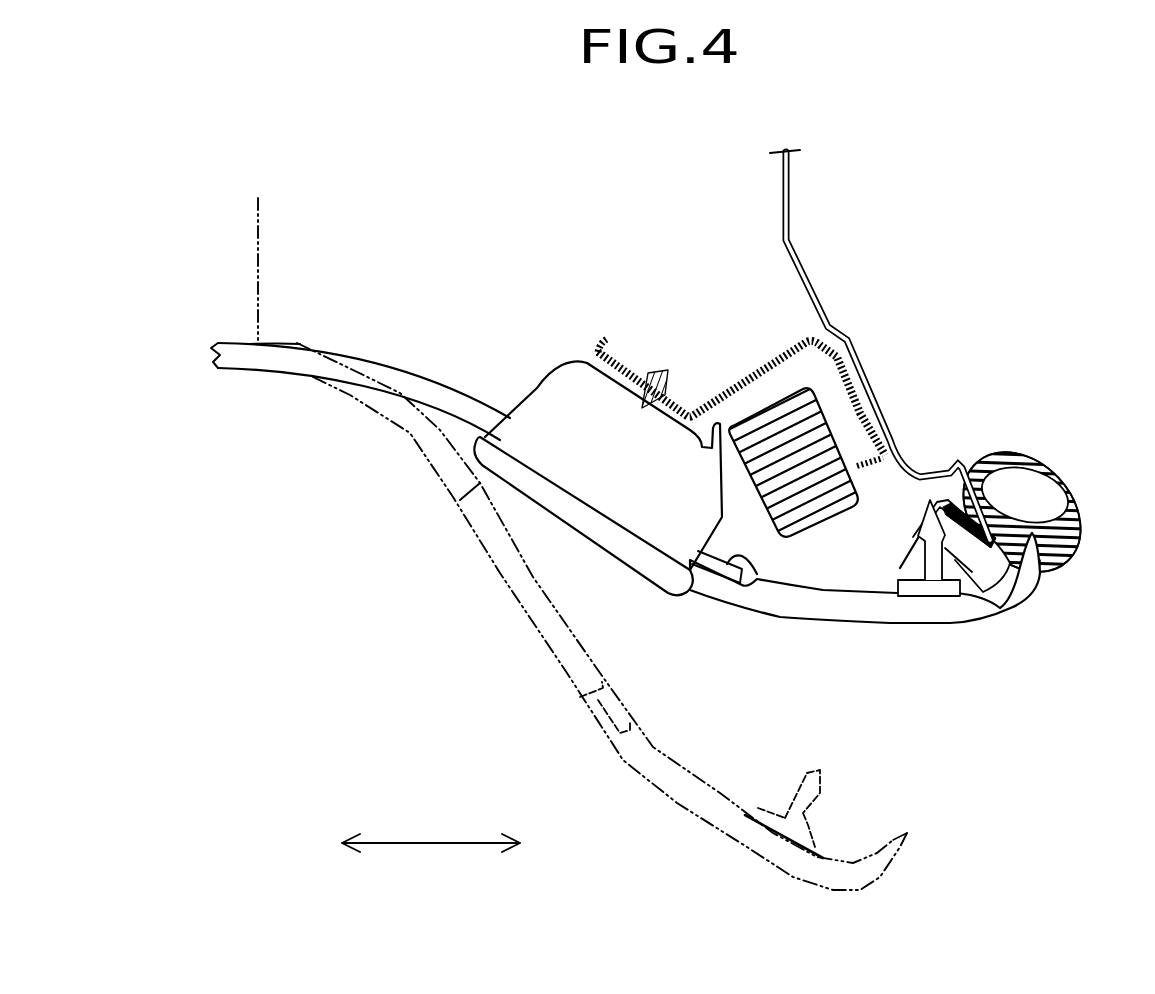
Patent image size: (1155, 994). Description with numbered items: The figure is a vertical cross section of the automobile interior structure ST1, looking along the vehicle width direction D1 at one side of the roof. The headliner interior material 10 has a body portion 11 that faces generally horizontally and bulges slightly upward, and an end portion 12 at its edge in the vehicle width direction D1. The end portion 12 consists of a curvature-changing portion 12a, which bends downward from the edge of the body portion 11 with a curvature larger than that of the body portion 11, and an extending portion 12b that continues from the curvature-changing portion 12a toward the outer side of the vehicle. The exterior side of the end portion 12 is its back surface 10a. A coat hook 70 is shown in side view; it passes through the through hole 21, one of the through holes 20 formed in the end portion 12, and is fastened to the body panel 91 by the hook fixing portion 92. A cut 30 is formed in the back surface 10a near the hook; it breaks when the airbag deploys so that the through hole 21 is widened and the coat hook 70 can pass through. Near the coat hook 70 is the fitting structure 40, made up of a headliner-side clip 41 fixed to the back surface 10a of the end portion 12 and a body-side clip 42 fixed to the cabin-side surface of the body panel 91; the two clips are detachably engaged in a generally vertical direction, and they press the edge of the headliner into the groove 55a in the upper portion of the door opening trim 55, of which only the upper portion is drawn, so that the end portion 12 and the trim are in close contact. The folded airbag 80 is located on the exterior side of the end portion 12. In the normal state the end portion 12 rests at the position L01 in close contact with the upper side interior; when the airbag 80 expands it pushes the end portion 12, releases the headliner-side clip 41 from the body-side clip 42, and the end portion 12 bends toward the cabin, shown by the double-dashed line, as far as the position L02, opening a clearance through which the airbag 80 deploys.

The headliner interior material 10 is at (309, 420).
The back surface 10a is at (367, 350).
The body portion 11 is at (243, 328).
The end portion 12 is at (695, 470).
The curvature-changing portion 12a is at (293, 340).
The extending portion 12b is at (867, 627).
The through hole 20 is at (596, 415).
The through hole 21 is at (508, 415).
The cut 30 is at (753, 570).
The fitting structure 40 is at (1080, 655).
The headliner-side clip 41 is at (930, 592).
The body-side clip 42 is at (980, 590).
The door opening trim 55 is at (1035, 452).
The groove 55a is at (1038, 580).
The coat hook 70 is at (560, 358).
The airbag 80 is at (825, 425).
The body panel 91 is at (813, 270).
The hook fixing portion 92 is at (757, 370).
The automobile interior structure ST1 is at (325, 184).
The position L01 is at (1113, 525).
The position L02 is at (919, 902).
The vehicle width direction D1 is at (431, 860).